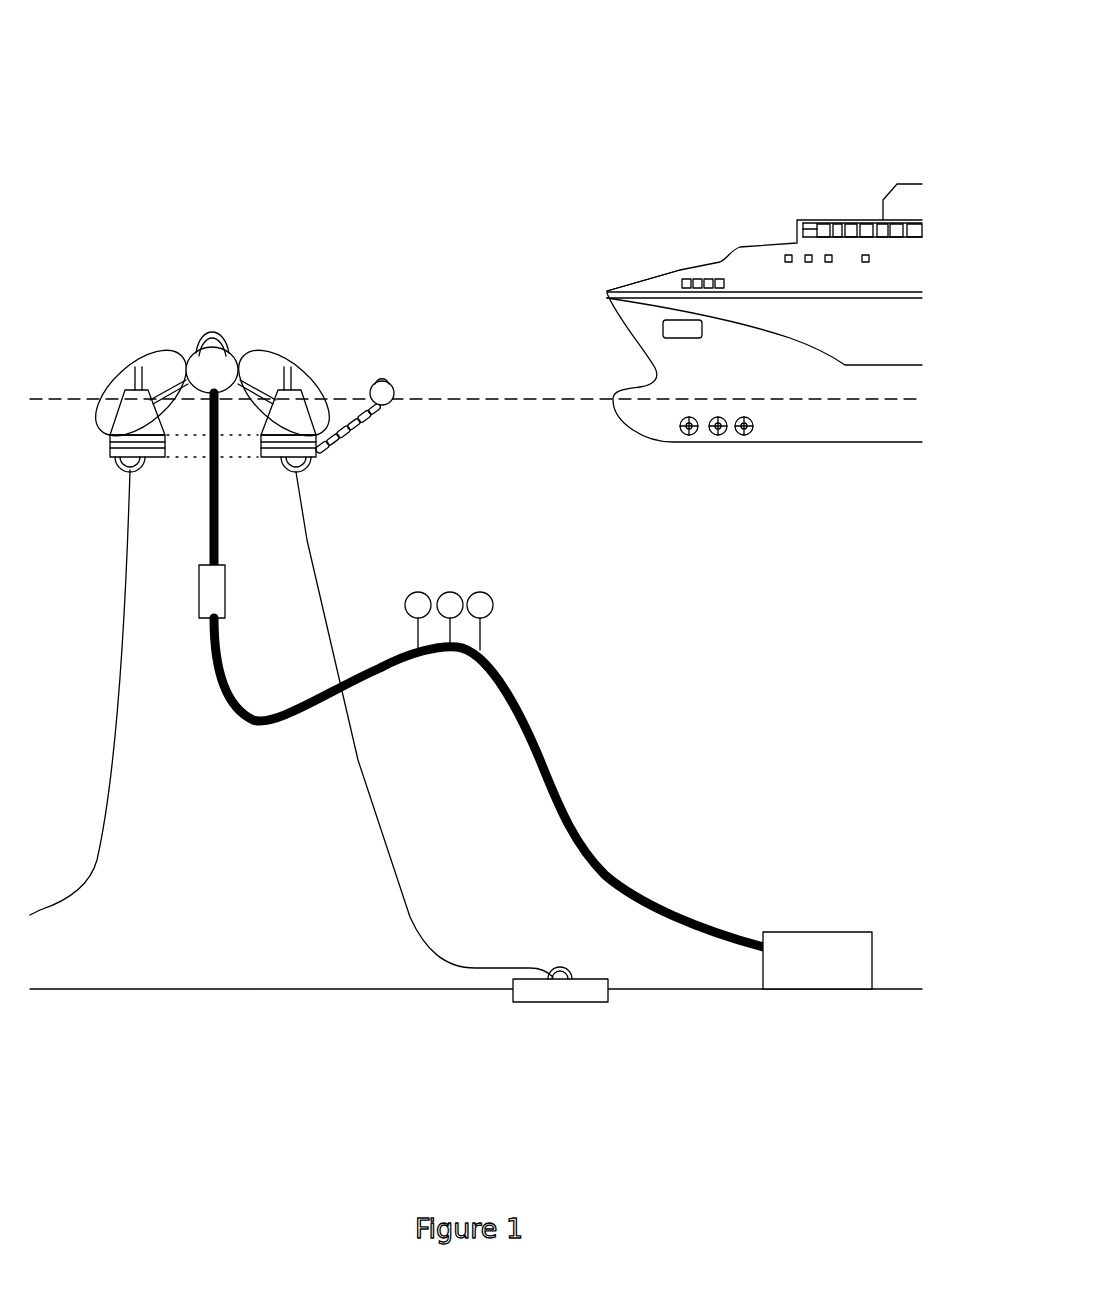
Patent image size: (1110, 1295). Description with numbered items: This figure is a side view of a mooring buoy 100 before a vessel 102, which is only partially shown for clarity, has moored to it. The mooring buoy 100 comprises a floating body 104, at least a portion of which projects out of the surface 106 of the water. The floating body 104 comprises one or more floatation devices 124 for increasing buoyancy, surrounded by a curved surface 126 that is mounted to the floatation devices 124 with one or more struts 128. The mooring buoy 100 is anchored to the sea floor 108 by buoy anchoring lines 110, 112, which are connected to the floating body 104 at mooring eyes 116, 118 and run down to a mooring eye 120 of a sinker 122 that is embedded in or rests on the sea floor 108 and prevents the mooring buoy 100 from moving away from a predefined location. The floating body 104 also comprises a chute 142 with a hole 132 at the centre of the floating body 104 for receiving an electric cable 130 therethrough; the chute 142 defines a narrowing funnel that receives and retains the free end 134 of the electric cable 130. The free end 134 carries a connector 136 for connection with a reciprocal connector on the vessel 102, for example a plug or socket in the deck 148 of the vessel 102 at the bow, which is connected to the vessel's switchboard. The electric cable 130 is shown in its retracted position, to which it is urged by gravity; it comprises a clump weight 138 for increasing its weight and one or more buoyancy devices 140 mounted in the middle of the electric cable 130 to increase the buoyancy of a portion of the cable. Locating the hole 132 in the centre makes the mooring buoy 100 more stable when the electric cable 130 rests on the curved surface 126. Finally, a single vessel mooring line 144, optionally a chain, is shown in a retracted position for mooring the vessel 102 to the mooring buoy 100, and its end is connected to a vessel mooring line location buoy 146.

The mooring buoy 100 is at (142, 138).
The vessel 102 is at (808, 213).
The floating body 104 is at (113, 391).
The surface 106 is at (518, 398).
The sea floor 108 is at (167, 989).
The buoy anchoring line 110 is at (87, 885).
The buoy anchoring line 112 is at (410, 917).
The mooring eye 116 is at (115, 468).
The mooring eye 118 is at (310, 467).
The mooring eye 120 is at (572, 973).
The sinker 122 is at (562, 1002).
The floatation device 124 is at (310, 420).
The curved surface 126 is at (280, 360).
The strut 128 is at (273, 360).
The electric cable 130 is at (530, 702).
The hole 132 is at (104, 409).
The free end 134 is at (193, 357).
The connector 136 is at (231, 357).
The clump weight 138 is at (200, 598).
The buoyancy device 140 is at (487, 592).
The chute 142 is at (317, 347).
The single vessel mooring line 144 is at (367, 443).
The vessel mooring line location buoy 146 is at (390, 380).
The deck 148 is at (680, 270).